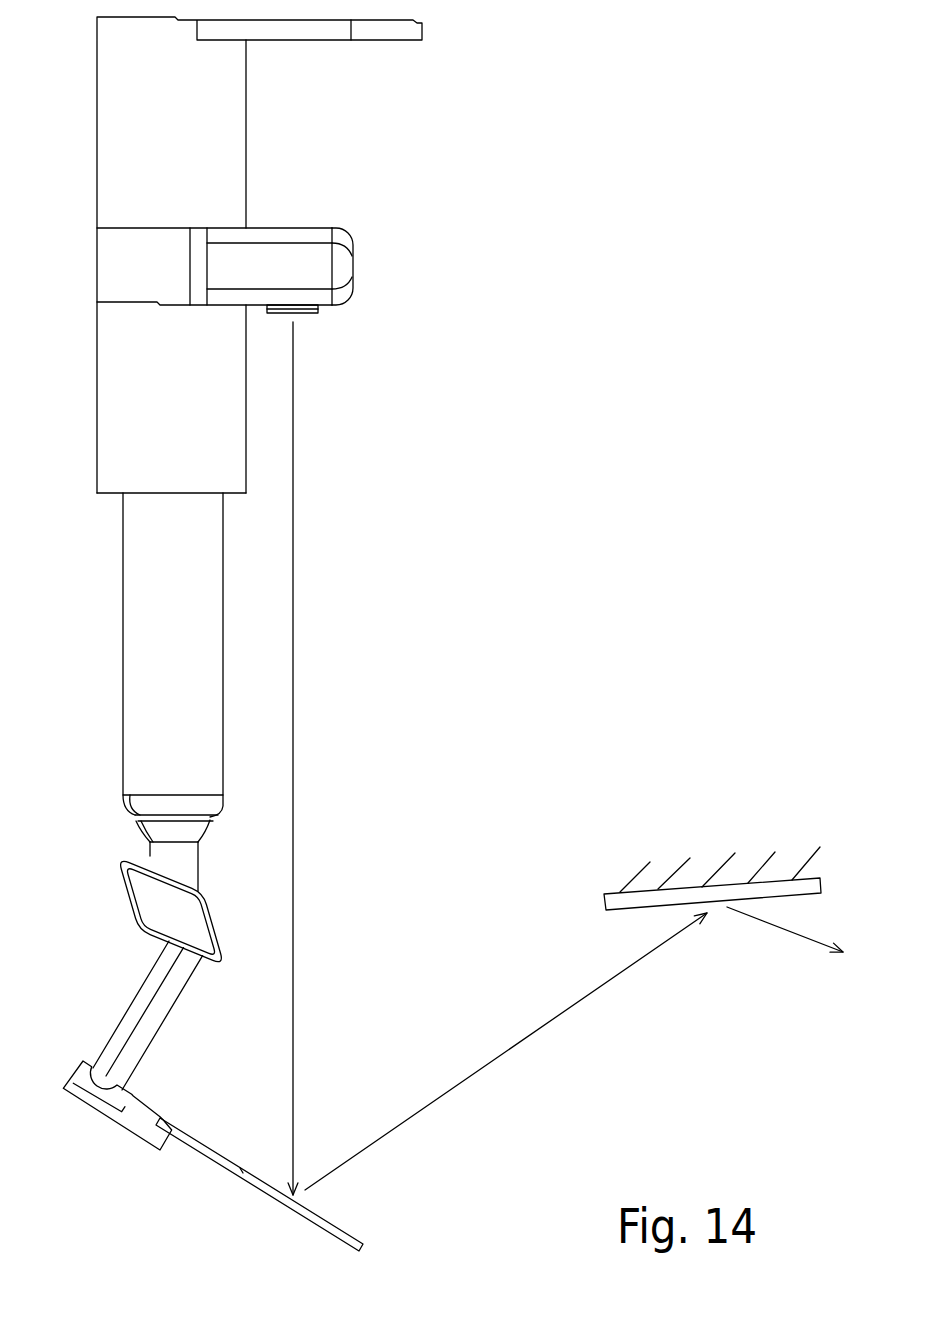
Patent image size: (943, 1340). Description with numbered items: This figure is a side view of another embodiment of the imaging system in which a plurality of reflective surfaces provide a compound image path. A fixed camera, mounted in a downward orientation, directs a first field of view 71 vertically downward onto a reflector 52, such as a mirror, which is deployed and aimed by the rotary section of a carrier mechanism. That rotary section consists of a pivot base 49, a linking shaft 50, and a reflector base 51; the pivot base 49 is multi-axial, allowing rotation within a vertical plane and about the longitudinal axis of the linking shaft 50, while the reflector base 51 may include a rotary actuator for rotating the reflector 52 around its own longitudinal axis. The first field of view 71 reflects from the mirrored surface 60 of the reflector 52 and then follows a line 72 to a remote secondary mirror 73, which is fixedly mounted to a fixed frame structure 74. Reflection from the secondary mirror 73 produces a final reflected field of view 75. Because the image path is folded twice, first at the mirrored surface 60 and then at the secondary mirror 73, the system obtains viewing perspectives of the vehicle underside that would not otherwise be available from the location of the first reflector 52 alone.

The pivot base 49 is at (128, 903).
The linking shaft 50 is at (121, 1020).
The reflector base 51 is at (126, 1134).
The reflector 52 is at (338, 1237).
The mirrored surface 60 is at (323, 1217).
The first field of view 71 is at (293, 597).
The line 72 is at (415, 1112).
The secondary mirror 73 is at (604, 903).
The fixed frame structure 74 is at (625, 875).
The final reflected field of view 75 is at (773, 925).